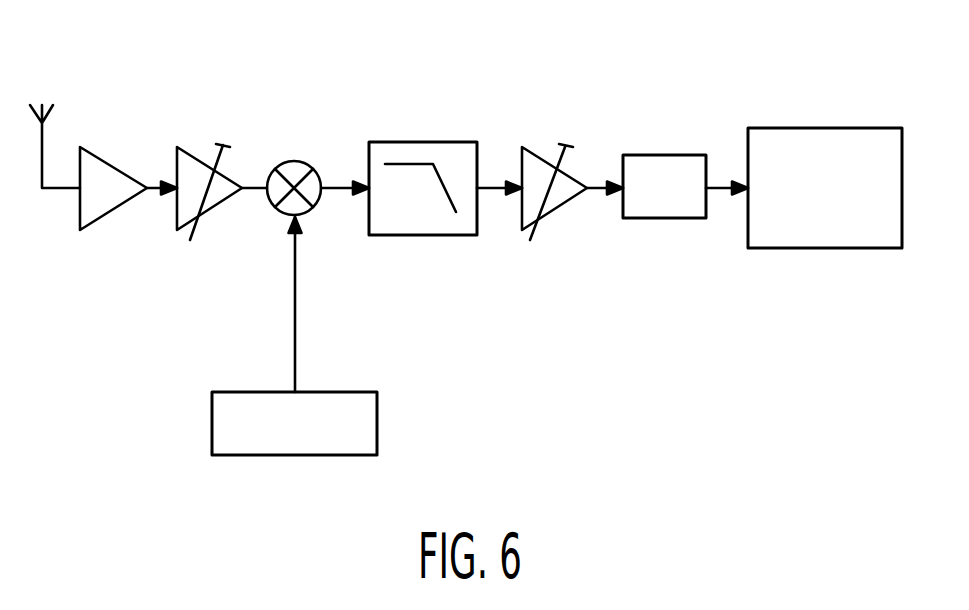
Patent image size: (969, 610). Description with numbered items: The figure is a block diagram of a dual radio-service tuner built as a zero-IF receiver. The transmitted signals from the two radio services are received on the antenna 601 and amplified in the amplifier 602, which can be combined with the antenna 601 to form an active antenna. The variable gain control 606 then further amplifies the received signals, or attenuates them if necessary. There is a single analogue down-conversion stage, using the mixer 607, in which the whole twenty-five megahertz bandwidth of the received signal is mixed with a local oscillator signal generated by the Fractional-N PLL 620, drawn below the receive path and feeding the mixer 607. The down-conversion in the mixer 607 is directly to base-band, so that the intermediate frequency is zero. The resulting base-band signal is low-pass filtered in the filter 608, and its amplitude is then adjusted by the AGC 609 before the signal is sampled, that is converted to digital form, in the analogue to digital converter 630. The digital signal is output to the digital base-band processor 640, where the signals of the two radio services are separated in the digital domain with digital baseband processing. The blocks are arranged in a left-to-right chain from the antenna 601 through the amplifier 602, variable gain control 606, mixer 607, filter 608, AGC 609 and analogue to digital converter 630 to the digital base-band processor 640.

The antenna 601 is at (47, 110).
The amplifier 602 is at (117, 163).
The variable gain control 606 is at (193, 145).
The mixer 607 is at (290, 161).
The filter 608 is at (407, 142).
The AGC 609 is at (536, 147).
The analogue to digital converter 630 is at (657, 155).
The digital base-band processor 640 is at (780, 128).
The Fractional-N PLL 620 is at (238, 392).